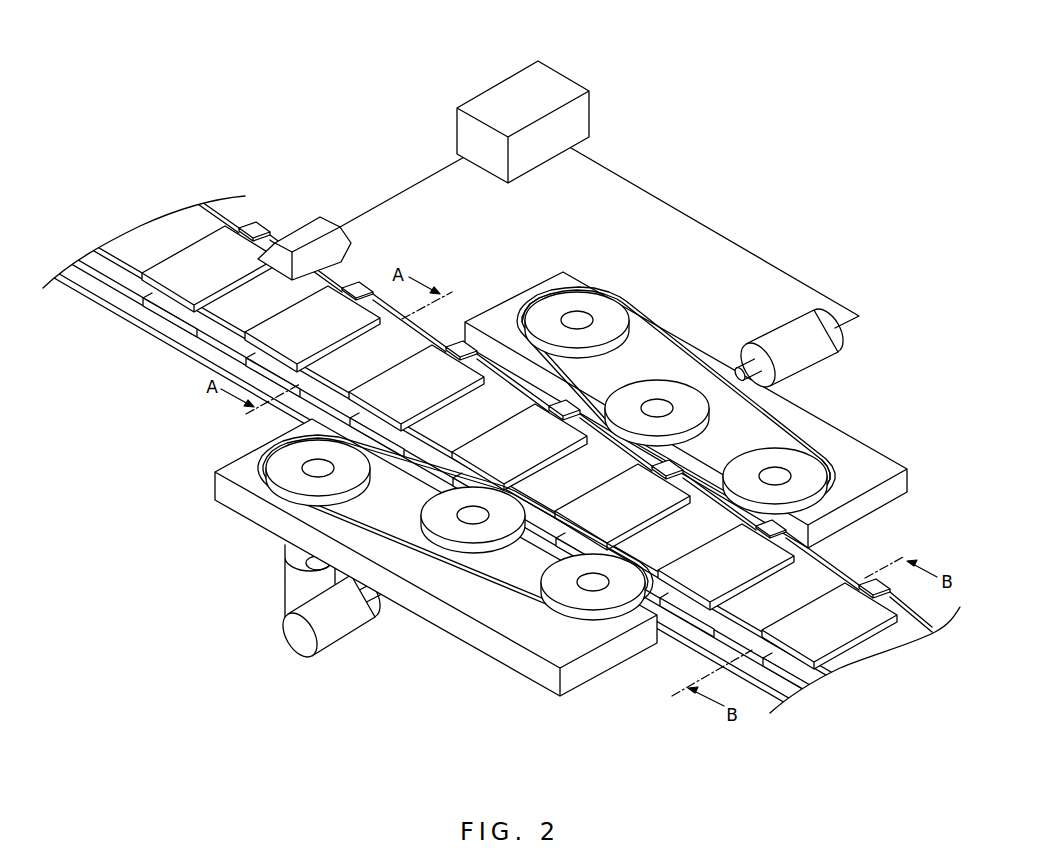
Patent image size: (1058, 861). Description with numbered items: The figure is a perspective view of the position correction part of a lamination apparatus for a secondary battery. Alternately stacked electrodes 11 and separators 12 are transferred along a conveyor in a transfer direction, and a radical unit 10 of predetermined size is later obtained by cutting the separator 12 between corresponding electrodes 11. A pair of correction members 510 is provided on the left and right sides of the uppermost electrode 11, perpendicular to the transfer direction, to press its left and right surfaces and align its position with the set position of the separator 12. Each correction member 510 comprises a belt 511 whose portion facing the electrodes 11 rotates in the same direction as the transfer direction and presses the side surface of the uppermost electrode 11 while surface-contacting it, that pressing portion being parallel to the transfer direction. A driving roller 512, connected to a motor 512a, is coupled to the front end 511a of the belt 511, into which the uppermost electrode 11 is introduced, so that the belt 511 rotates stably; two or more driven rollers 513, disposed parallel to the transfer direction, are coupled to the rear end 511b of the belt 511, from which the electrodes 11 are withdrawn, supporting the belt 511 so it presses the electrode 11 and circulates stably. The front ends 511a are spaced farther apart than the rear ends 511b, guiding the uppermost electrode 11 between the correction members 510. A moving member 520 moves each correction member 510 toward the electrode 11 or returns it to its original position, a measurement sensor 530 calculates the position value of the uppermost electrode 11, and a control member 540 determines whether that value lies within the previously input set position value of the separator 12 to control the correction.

The radical unit 10 is at (510, 458).
The electrode 11 is at (167, 307).
The separator 12 is at (160, 247).
The correction member 510 is at (506, 378).
The belt 511 is at (535, 365).
The front end of the belt 511a is at (533, 298).
The rear end of the belt 511b is at (823, 497).
The driving roller 512 is at (600, 307).
The motor 512a is at (290, 592).
The driven roller 513 is at (750, 460).
The moving member 520 is at (813, 358).
The measurement sensor 530 is at (303, 232).
The control member 540 is at (557, 80).